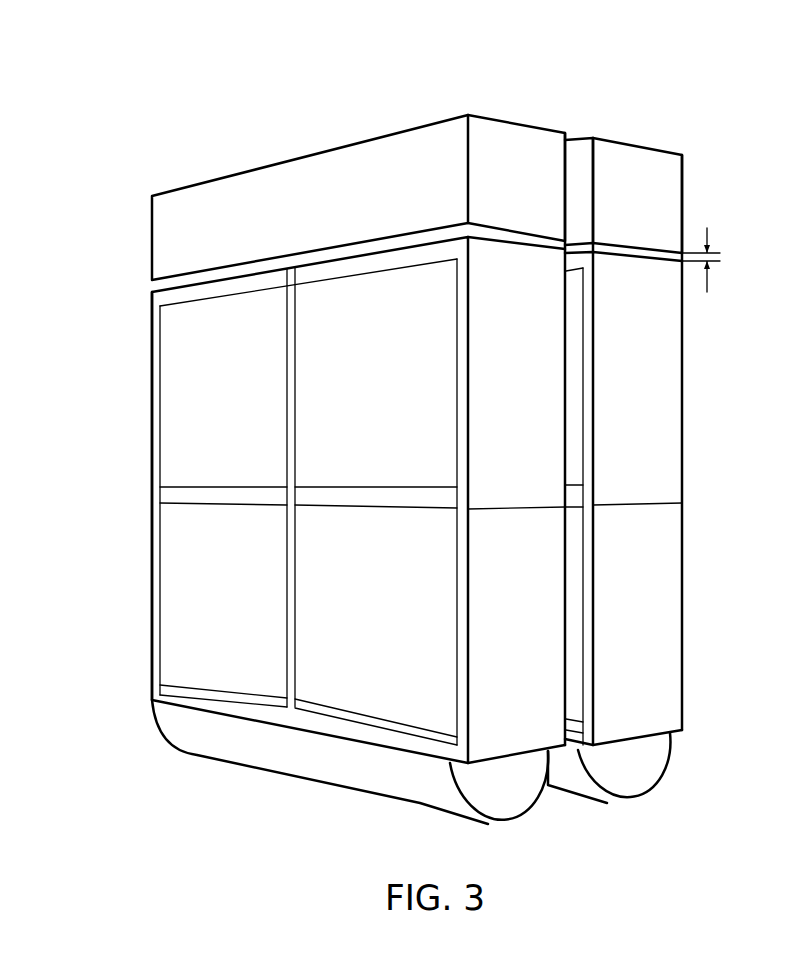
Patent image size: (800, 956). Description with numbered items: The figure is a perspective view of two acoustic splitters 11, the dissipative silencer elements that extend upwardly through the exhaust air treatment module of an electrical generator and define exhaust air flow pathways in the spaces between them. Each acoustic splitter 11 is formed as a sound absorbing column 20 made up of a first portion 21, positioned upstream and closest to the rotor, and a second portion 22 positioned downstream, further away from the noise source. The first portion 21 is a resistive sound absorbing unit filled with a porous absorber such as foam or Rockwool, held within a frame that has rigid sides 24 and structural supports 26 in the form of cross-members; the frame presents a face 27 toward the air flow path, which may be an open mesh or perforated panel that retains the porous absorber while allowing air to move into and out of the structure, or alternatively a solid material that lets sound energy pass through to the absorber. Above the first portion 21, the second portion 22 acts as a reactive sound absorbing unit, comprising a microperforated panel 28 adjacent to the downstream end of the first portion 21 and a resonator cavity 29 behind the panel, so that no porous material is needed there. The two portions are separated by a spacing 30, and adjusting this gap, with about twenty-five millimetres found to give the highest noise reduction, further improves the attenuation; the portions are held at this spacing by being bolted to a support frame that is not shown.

The acoustic splitter 11 is at (370, 693).
The sound absorbing column 20 is at (150, 353).
The first portion 21 is at (150, 568).
The second portion 22 is at (160, 230).
The rigid sides 24 is at (543, 622).
The structural supports 26 is at (183, 497).
The face 27 is at (182, 417).
The microperforated panel 28 is at (652, 256).
The resonator cavity 29 is at (593, 138).
The spacing 30 is at (155, 287).